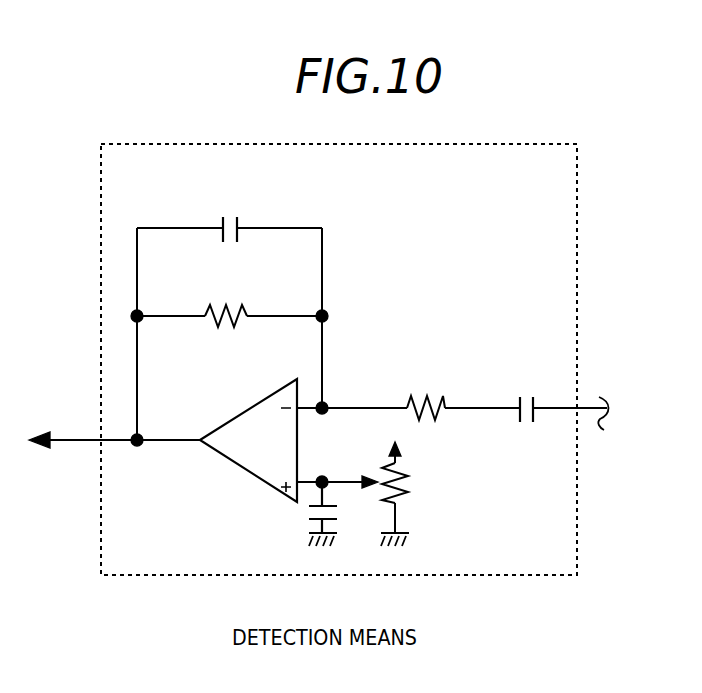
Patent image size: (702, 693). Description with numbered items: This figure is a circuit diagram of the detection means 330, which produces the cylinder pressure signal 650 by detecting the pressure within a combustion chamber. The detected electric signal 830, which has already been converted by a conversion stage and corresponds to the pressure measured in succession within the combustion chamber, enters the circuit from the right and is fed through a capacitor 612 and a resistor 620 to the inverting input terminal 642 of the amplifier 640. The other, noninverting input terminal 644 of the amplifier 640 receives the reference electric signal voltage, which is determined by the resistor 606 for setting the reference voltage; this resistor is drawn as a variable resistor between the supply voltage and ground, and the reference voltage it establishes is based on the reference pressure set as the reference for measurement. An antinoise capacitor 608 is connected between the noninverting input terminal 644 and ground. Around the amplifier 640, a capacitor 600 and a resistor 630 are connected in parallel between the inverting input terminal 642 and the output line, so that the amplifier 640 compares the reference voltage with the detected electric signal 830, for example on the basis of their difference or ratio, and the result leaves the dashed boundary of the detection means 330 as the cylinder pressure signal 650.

The detection means 330 is at (510, 143).
The capacitor 600 is at (236, 218).
The resistor 630 is at (236, 312).
The amplifier 640 is at (237, 457).
The cylinder pressure signal 650 is at (58, 438).
The inverting input terminal 642 is at (302, 405).
The noninverting input terminal 644 is at (302, 478).
The resistor 620 is at (443, 400).
The capacitor 612 is at (537, 400).
The detected electric signal 830 is at (580, 410).
The resistor for setting the reference voltage 606 is at (413, 492).
The antinoise capacitor 608 is at (335, 520).